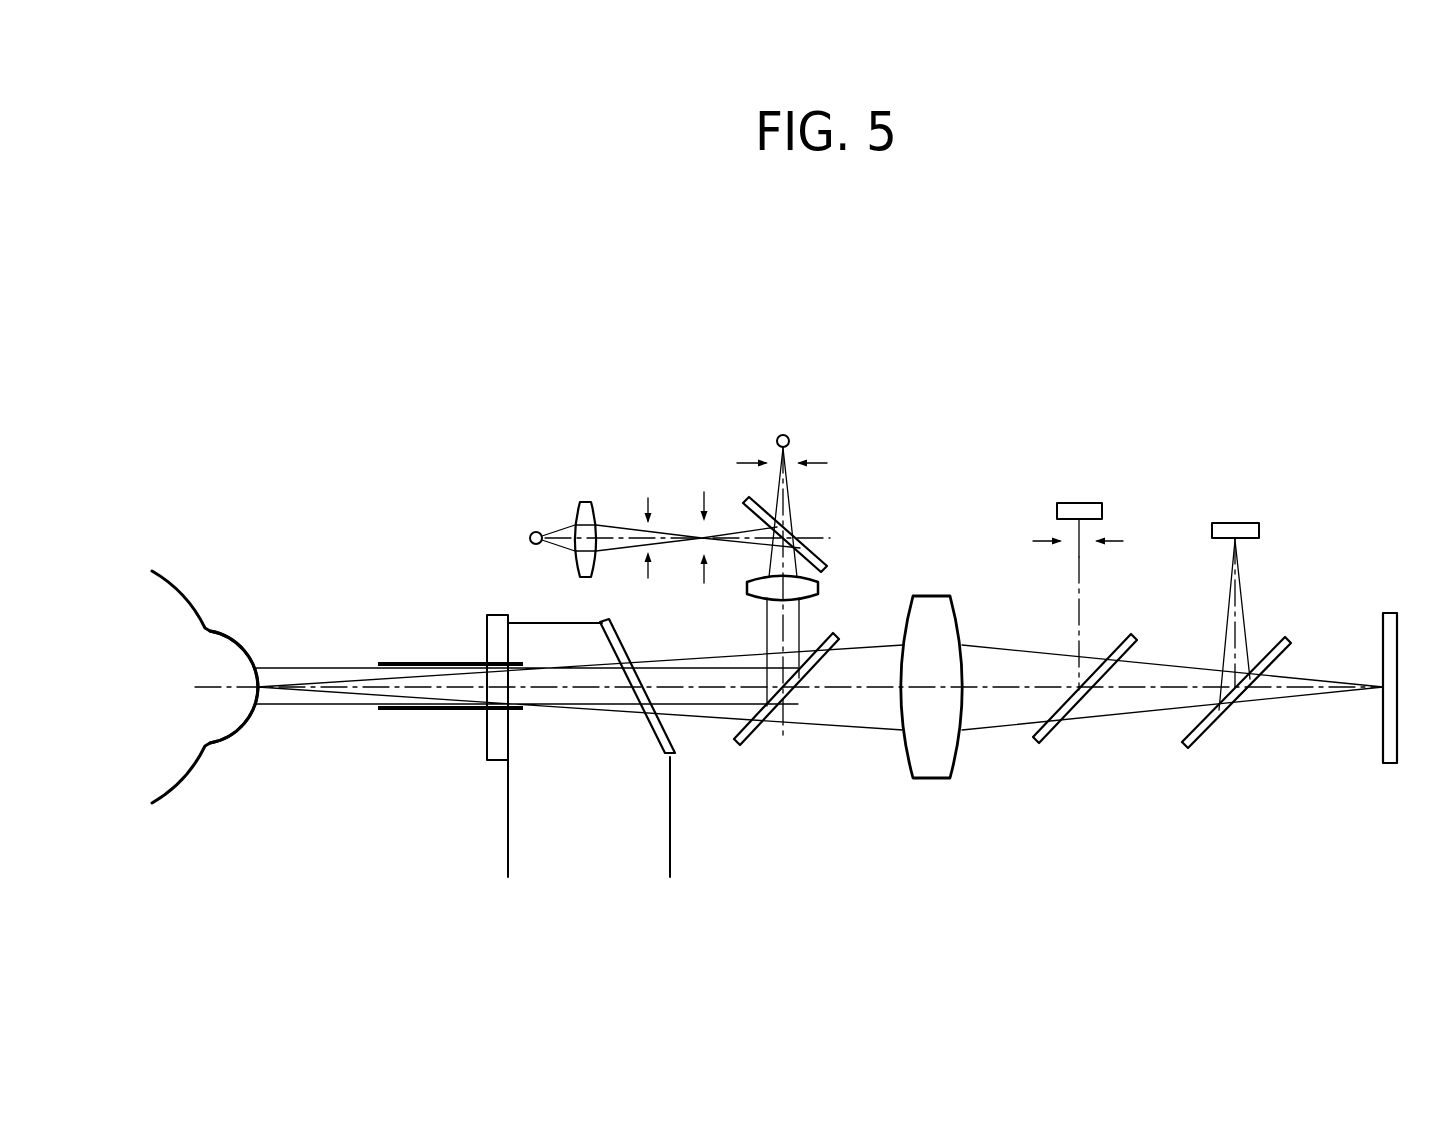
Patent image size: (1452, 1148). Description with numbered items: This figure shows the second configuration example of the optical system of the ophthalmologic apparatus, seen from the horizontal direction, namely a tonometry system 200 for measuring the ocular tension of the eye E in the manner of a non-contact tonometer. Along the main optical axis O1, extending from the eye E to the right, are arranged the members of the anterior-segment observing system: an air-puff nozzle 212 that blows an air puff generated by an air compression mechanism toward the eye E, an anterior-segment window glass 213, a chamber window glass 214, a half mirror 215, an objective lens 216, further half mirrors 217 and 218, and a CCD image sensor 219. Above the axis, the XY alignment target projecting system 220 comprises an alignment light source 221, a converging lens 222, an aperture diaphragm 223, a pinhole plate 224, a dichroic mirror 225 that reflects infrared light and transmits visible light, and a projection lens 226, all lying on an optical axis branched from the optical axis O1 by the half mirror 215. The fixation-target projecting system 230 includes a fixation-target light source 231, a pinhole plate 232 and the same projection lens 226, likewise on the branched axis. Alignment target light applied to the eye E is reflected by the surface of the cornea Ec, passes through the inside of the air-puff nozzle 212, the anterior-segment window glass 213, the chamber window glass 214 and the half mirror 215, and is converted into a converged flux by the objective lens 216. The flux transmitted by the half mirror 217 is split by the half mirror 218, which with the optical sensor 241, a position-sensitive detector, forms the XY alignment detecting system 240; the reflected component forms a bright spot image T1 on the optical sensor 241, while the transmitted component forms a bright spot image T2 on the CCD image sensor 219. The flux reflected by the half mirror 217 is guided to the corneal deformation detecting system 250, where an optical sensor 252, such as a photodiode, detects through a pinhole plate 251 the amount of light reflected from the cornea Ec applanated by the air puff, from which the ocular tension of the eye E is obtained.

The tonometry system 200 is at (841, 556).
The air-puff nozzle 212 is at (412, 661).
The anterior-segment window glass 213 is at (497, 614).
The chamber window glass 214 is at (618, 637).
The half mirror 215 is at (742, 749).
The objective lens 216 is at (946, 594).
The half mirror 217 is at (1042, 746).
The half mirror 218 is at (1192, 751).
The CCD image sensor 219 is at (1382, 752).
The XY alignment target projecting system 220 is at (696, 449).
The alignment light source 221 is at (534, 532).
The converging lens 222 is at (586, 500).
The aperture diaphragm 223 is at (646, 497).
The pinhole plate 224 is at (704, 491).
The dichroic mirror 225 is at (828, 556).
The projection lens 226 is at (819, 587).
The fixation-target projecting system 230 is at (835, 520).
The fixation-target light source 231 is at (783, 434).
The pinhole plate 232 is at (827, 463).
The XY alignment detecting system 240 is at (1319, 572).
The optical sensor 241 is at (1246, 522).
The corneal deformation detecting system 250 is at (1086, 541).
The pinhole plate 251 is at (1122, 540).
The optical sensor 252 is at (1084, 502).
The eye E is at (205, 642).
The cornea Ec is at (248, 640).
The optical axis O1 is at (870, 692).
The bright spot image T1 is at (1240, 543).
The bright spot image T2 is at (1380, 686).